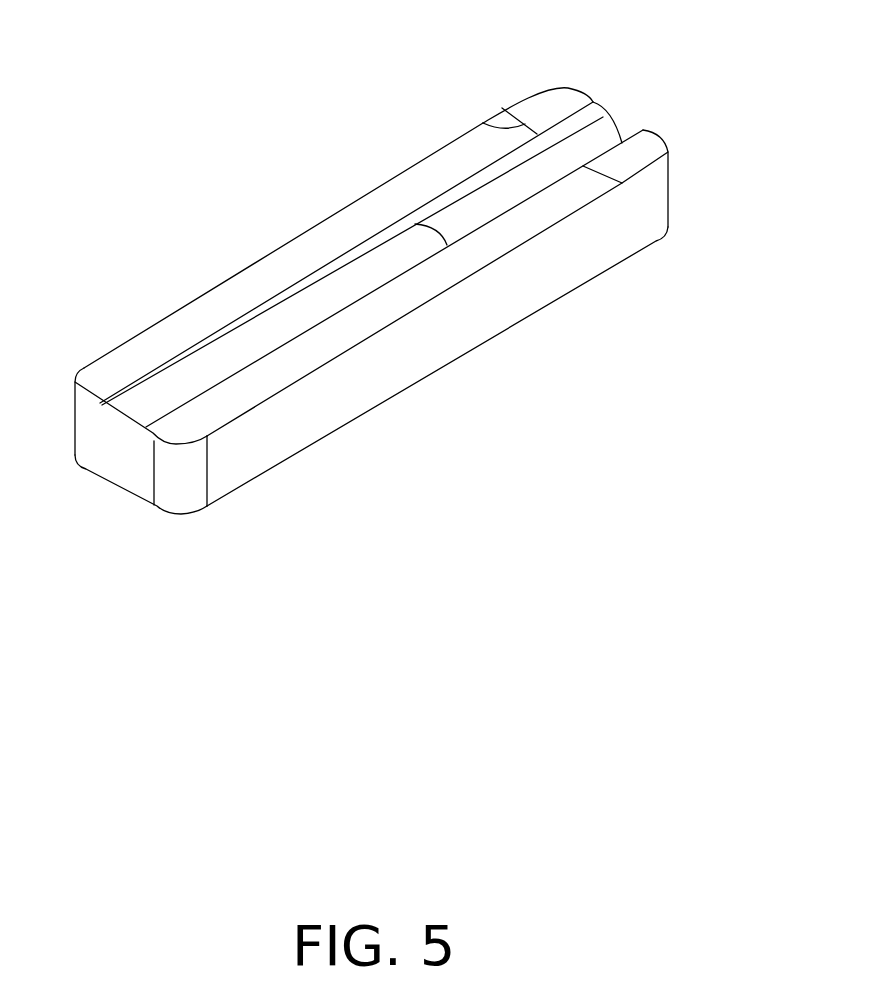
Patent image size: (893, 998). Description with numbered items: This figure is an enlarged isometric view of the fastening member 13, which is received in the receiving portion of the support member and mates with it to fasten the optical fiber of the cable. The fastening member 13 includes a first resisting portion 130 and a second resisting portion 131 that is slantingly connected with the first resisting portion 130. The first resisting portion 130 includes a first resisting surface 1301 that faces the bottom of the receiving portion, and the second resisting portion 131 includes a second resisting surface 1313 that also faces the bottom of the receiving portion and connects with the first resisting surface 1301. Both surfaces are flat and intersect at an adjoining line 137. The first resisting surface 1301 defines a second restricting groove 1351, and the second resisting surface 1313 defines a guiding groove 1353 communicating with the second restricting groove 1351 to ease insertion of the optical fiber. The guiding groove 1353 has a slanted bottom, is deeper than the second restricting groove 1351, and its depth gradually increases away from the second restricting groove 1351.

The fastening member 13 is at (761, 281).
The first resisting portion 130 is at (488, 320).
The second resisting portion 131 is at (652, 214).
The first resisting surface 1301 is at (443, 168).
The second restricting groove 1351 is at (150, 395).
The guiding groove 1353 is at (597, 141).
The adjoining line 137 is at (483, 123).
The second resisting surface 1313 is at (542, 107).